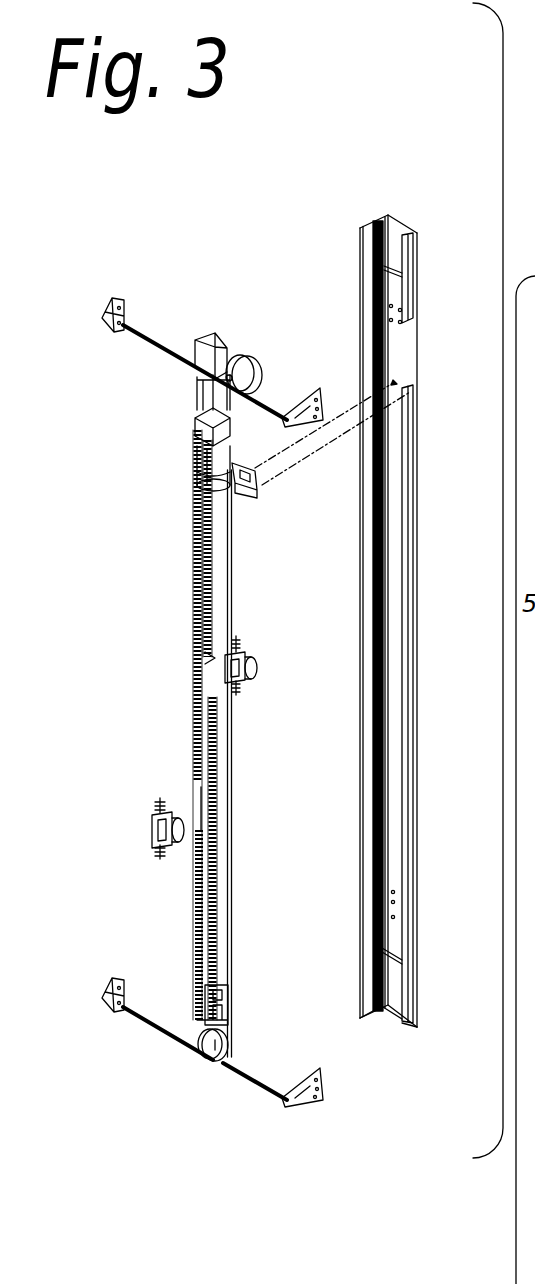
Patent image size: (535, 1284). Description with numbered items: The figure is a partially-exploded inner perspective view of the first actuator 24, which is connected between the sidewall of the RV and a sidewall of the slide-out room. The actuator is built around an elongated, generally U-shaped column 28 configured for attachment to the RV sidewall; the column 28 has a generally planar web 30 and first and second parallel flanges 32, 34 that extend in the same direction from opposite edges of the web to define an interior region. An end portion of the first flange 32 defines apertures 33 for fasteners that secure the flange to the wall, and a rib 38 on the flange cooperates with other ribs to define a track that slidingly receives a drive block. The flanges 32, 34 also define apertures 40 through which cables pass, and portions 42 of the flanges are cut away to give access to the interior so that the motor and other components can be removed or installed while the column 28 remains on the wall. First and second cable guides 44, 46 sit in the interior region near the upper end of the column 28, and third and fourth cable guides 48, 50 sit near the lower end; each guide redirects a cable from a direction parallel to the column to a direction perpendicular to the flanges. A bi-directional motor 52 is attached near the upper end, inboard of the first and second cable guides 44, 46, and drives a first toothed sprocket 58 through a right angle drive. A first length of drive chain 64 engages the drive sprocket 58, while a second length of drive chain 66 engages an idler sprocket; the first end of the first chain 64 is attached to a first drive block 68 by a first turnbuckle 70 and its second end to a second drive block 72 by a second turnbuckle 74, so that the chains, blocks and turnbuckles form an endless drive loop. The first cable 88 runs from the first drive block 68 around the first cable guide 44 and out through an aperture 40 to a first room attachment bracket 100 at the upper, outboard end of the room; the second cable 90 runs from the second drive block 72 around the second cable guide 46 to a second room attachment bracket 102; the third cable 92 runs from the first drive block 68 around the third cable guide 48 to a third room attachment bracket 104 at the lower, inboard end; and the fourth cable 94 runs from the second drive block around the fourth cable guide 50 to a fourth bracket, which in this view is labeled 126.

The first actuator 24 is at (218, 629).
The column 28 is at (390, 607).
The web 30 is at (400, 223).
The first flange 32 is at (370, 220).
The apertures 33 is at (370, 233).
The second flange 34 is at (407, 1027).
The rib 38 is at (412, 255).
The apertures 40 is at (412, 287).
The cut-away portions 42 is at (420, 353).
The first cable guide 44 is at (232, 357).
The second cable guide 46 is at (248, 356).
The third cable guide 48 is at (220, 1063).
The fourth cable guide 50 is at (222, 1055).
The bi-directional motor 52 is at (210, 457).
The first toothed sprocket 58 is at (191, 400).
The first length of drive chain 64 is at (198, 443).
The second length of drive chain 66 is at (197, 925).
The first drive block 68 is at (118, 826).
The first turnbuckle 70 is at (234, 708).
The second drive block 72 is at (154, 806).
The second turnbuckle 74 is at (237, 645).
The first cable 88 is at (270, 392).
The second cable 90 is at (160, 328).
The third cable 92 is at (153, 1027).
The fourth cable 94 is at (250, 1078).
The first room attachment bracket 100 is at (312, 390).
The second room attachment bracket 102 is at (116, 297).
The third room attachment bracket 104 is at (108, 982).
The lower right mounting bracket 126 is at (303, 1070).